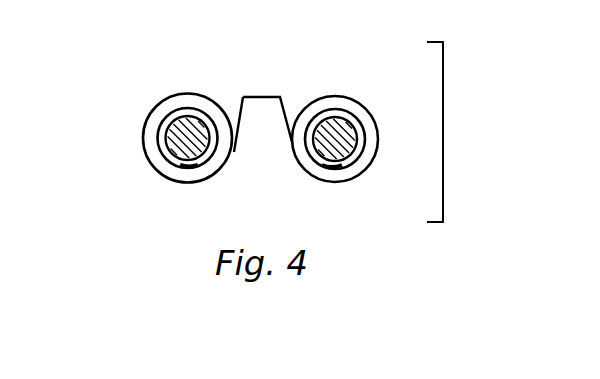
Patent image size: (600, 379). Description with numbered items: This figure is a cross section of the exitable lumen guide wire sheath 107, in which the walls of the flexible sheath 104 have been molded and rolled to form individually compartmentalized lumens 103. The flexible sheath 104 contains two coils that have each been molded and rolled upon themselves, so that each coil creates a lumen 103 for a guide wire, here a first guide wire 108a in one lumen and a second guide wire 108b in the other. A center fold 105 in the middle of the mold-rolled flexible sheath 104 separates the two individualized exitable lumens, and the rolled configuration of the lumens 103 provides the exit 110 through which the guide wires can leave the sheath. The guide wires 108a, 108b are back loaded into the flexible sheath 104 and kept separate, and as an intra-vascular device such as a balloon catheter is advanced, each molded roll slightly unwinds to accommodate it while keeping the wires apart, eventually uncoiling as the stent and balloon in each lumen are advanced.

The individually compartmentalized lumen 103 is at (178, 168).
The flexible sheath 104 is at (143, 137).
The fold 105 is at (266, 96).
The exitable lumen guide wire sheath 107 is at (444, 141).
The first guide wire 108a is at (192, 123).
The second guide wire 108b is at (345, 137).
The exit 110 is at (297, 149).